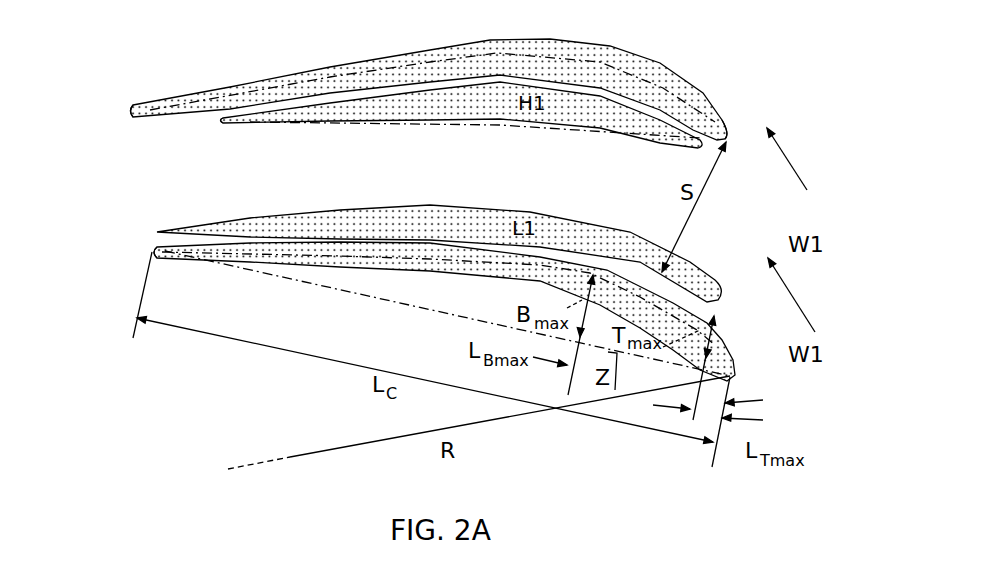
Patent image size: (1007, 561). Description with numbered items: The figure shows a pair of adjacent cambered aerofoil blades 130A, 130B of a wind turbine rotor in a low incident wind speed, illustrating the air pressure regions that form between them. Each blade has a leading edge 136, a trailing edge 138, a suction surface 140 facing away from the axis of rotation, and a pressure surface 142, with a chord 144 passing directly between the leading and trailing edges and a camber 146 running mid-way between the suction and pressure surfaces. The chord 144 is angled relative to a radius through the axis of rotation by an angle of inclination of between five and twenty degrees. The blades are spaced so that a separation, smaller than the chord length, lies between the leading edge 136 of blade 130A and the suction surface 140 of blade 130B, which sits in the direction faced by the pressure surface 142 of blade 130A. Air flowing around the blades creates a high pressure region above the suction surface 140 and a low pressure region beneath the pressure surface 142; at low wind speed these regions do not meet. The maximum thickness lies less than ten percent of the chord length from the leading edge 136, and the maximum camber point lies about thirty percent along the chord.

The first aerofoil blade 130A is at (152, 63).
The second aerofoil blade 130B is at (145, 358).
The leading edge 136 is at (728, 138).
The trailing edge 138 is at (130, 108).
The suction surface 140 is at (688, 36).
The pressure surface 142 is at (312, 93).
The chord 144 is at (222, 118).
The camber 146 is at (408, 62).